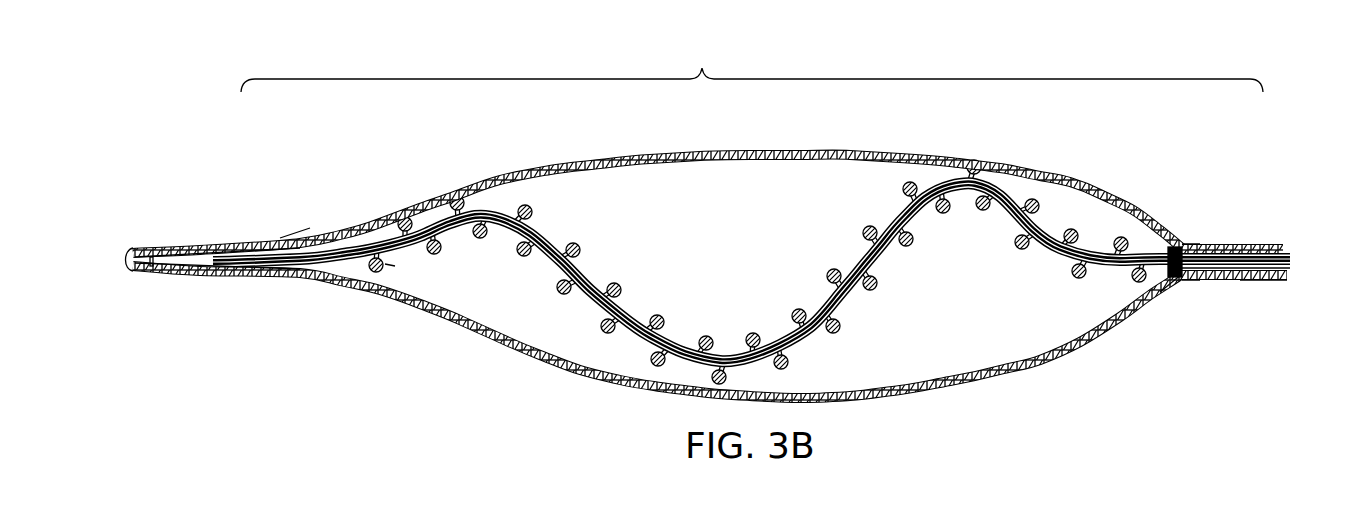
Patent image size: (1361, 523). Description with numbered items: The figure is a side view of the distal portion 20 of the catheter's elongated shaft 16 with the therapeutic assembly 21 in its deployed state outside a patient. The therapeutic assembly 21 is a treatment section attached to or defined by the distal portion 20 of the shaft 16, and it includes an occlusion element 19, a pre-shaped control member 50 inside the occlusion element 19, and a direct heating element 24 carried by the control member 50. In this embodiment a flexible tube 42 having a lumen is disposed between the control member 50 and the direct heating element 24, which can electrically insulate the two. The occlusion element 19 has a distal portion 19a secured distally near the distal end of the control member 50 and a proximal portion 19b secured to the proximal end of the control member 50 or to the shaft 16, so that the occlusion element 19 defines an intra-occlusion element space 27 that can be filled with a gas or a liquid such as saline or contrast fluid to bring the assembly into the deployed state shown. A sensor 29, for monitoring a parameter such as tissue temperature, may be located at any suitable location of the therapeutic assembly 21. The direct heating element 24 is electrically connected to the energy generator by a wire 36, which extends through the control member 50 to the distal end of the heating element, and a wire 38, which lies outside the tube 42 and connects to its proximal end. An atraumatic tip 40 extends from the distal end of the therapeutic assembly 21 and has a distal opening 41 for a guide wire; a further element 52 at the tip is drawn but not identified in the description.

The elongated shaft 16 is at (1280, 244).
The occlusion element 19 is at (860, 150).
The distal portion of the occlusion element 19a is at (297, 233).
The proximal portion of the occlusion element 19b is at (1205, 240).
The distal portion 20 is at (1083, 44).
The therapeutic assembly 21 is at (752, 64).
The direct heating element 24 is at (607, 277).
The intra-occlusion element space 27 is at (487, 288).
The sensor 29 is at (1177, 281).
The wire 36 is at (1188, 246).
The wire 38 is at (1286, 283).
The atraumatic tip 40 is at (178, 248).
The opening 41 is at (127, 258).
The flexible tube 42 is at (393, 268).
The control member 50 is at (228, 256).
The tip plug 52 is at (152, 273).